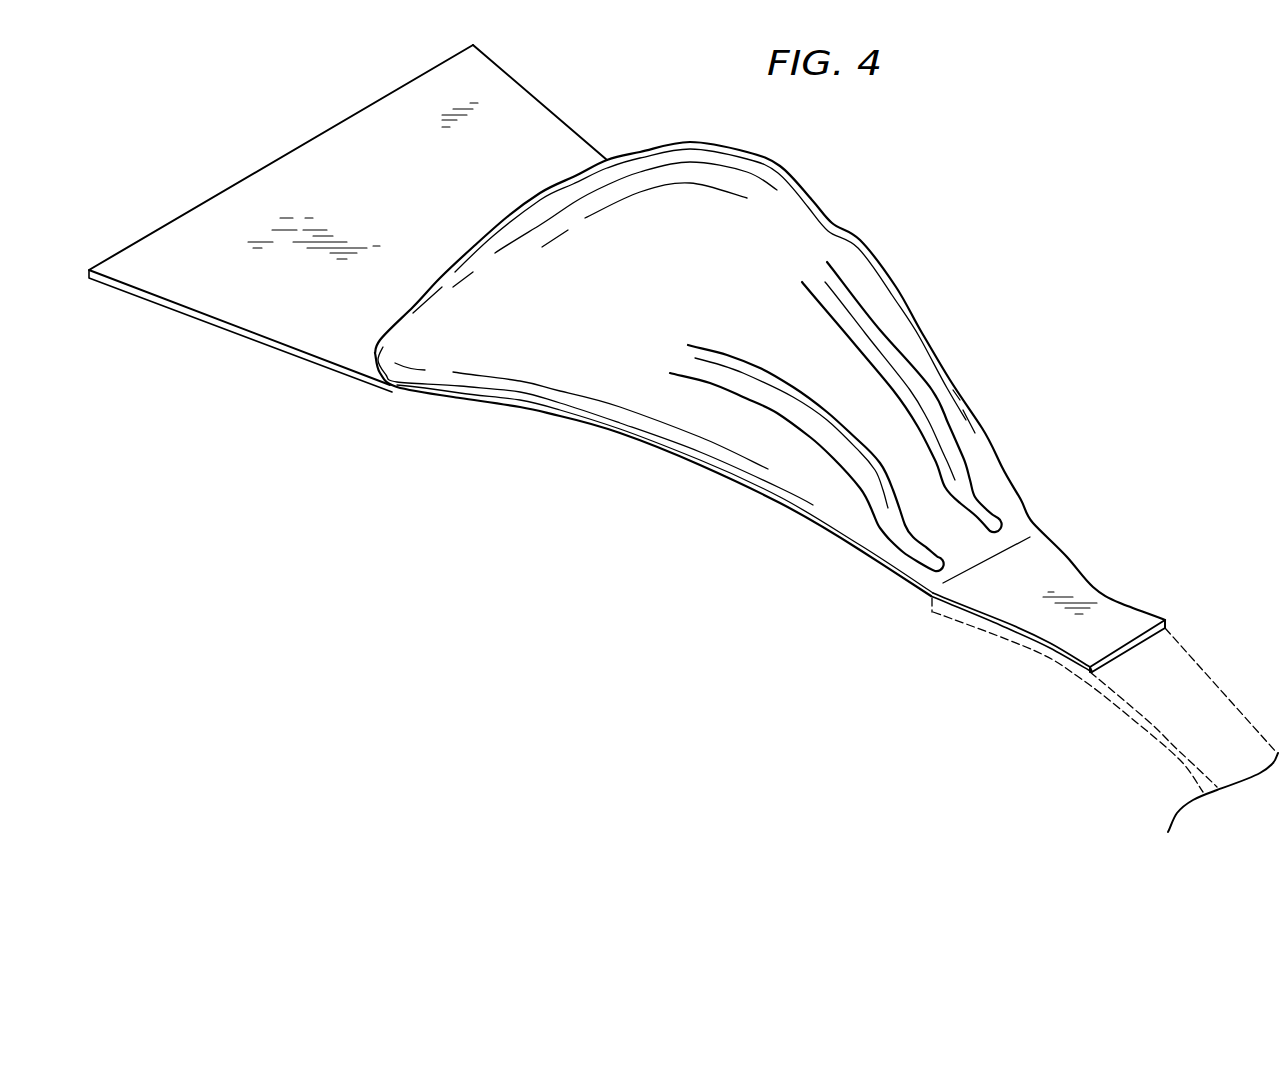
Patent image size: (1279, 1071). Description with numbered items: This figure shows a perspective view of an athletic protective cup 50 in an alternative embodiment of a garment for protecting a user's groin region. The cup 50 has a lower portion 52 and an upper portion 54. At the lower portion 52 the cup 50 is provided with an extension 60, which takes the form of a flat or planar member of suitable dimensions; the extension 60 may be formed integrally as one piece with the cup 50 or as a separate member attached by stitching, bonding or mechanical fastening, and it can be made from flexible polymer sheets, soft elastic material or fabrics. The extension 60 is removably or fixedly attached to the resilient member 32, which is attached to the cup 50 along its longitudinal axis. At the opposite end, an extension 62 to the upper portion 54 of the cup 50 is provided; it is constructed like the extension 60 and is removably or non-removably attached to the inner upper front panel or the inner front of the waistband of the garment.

The resilient member 32 is at (1212, 715).
The cup 50 is at (840, 225).
The lower portion 52 is at (1033, 523).
The upper portion 54 is at (385, 393).
The extension 60 is at (1115, 608).
The extension 62 is at (402, 84).